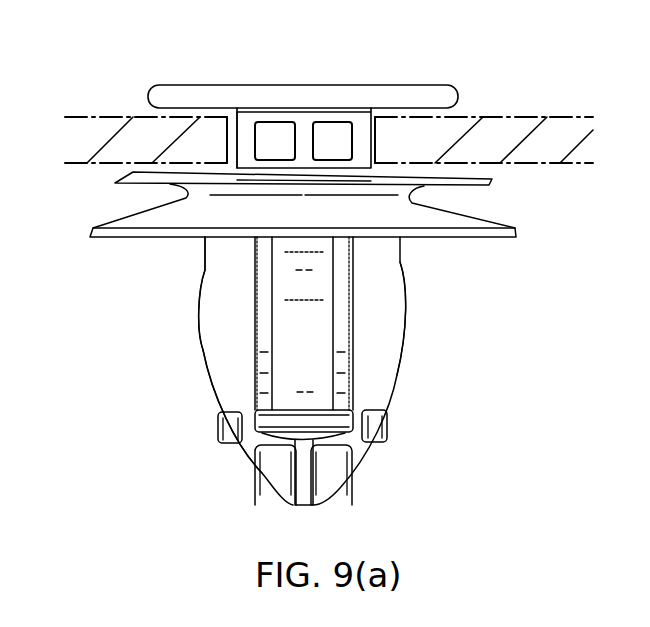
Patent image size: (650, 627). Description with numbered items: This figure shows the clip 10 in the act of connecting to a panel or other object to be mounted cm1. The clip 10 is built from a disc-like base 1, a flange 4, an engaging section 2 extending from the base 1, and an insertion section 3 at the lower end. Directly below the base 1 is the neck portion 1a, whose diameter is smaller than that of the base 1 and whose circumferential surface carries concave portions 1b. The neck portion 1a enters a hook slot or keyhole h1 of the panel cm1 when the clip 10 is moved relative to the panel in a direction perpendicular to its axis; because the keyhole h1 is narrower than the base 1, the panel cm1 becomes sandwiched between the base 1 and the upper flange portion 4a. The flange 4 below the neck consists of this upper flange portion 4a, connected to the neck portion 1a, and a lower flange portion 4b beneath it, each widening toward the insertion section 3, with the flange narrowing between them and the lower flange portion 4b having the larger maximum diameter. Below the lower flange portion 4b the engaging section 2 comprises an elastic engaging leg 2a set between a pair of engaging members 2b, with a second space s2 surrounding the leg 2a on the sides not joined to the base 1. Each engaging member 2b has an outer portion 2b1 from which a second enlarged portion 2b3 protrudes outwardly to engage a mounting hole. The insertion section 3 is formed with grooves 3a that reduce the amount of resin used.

The clip 10 is at (148, 73).
The hook slot or keyhole h1 is at (232, 137).
The base 1 is at (420, 97).
The panel or object to be mounted cm1 is at (458, 130).
The neck portion 1a is at (358, 125).
The concave portions 1b is at (332, 147).
The flange 4 is at (538, 180).
The upper flange portion 4a is at (462, 176).
The lower flange portion 4b is at (473, 220).
The engaging section 2 is at (513, 240).
The engaging leg 2a is at (323, 363).
The engaging members 2b is at (325, 371).
The outer portion 2b1 is at (383, 339).
The second enlarged portion 2b3 is at (198, 266).
The insertion section 3 is at (357, 437).
The grooves 3a is at (270, 470).
The second space s2 is at (260, 331).